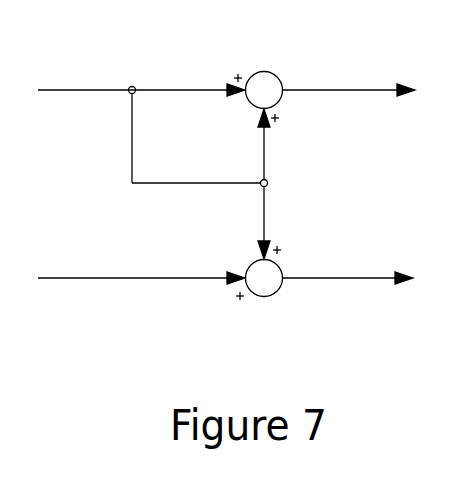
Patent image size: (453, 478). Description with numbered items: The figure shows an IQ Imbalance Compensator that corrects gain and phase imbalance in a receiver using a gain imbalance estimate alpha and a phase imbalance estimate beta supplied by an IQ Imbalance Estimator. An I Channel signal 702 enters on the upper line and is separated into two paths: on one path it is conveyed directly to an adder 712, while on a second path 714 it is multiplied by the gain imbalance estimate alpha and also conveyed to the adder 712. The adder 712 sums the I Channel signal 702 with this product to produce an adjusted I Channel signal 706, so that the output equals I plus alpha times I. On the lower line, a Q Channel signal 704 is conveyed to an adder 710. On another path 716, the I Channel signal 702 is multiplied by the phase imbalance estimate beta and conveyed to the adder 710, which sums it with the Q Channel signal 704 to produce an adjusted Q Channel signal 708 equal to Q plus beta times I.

The I Channel signal 702 is at (65, 91).
The Q Channel signal 704 is at (79, 279).
The adjusted I Channel signal 706 is at (360, 92).
The adjusted Q Channel signal 708 is at (353, 280).
The adder 710 is at (265, 297).
The adder 712 is at (264, 69).
The second path 714 is at (266, 137).
The another path 716 is at (266, 209).